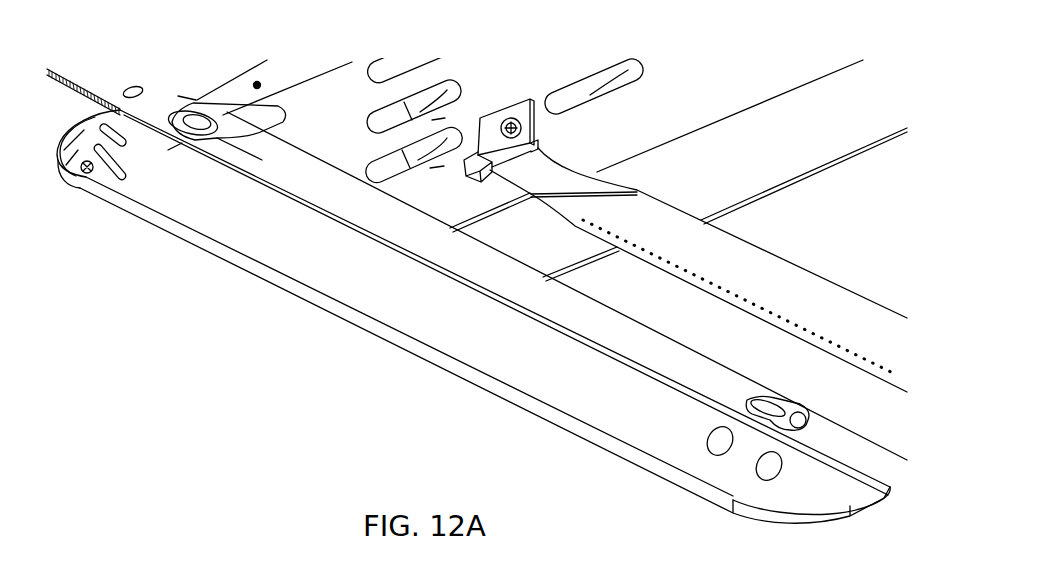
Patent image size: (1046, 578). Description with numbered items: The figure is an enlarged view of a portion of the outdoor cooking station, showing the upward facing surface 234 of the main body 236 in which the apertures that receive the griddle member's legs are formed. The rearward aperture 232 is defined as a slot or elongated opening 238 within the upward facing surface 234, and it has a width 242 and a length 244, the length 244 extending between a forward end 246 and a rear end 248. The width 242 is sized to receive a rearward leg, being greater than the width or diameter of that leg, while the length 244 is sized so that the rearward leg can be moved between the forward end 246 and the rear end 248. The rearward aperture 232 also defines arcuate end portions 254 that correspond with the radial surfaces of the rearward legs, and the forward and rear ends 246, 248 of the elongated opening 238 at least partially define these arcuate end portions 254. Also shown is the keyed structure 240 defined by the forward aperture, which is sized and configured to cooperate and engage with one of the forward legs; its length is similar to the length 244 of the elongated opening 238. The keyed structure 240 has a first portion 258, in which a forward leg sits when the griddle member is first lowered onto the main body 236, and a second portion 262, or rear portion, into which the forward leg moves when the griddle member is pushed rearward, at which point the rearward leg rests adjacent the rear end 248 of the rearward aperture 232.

The rearward aperture 232 is at (205, 100).
The upward facing surface 234 is at (586, 310).
The main body 236 is at (696, 352).
The elongated opening 238 is at (200, 107).
The keyed structure 240 is at (775, 395).
The width 242 is at (256, 142).
The length 244 is at (167, 150).
The forward end 246 is at (193, 138).
The rear end 248 is at (170, 115).
The arcuate end portion 254 is at (188, 98).
The first portion 258 is at (813, 408).
The second portion 262 is at (765, 400).